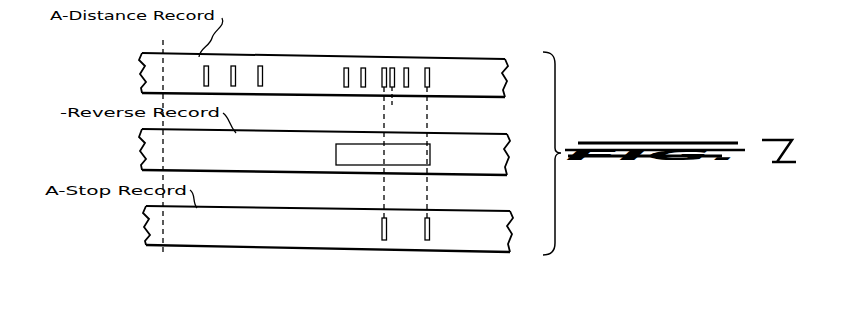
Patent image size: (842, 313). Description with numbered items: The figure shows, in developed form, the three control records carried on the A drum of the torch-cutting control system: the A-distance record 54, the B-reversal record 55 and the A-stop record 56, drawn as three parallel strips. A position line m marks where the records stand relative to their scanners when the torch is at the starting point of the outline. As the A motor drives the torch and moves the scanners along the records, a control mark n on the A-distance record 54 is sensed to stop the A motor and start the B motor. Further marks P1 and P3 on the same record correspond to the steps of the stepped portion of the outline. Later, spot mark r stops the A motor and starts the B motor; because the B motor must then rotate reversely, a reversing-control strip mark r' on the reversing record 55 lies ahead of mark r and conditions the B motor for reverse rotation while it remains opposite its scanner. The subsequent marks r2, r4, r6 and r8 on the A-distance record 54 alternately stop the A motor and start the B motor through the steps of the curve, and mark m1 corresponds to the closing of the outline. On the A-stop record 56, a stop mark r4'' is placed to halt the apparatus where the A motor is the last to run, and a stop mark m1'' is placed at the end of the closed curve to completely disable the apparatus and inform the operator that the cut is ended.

The A-distance record 54 is at (142, 63).
The B-reversal record 55 is at (142, 148).
The A-stop record 56 is at (146, 221).
The position m is at (173, 43).
The control mark n is at (206, 66).
The control mark P1 is at (233, 66).
The control mark P3 is at (260, 66).
The control mark r is at (347, 59).
The control mark r2 is at (364, 68).
The control mark r4 is at (392, 124).
The control mark r6 is at (390, 98).
The control mark r8 is at (406, 68).
The control mark m1 is at (441, 124).
The reversing-control strip mark r' is at (383, 137).
The stop mark r4'' is at (398, 214).
The stop mark m1'' is at (443, 249).